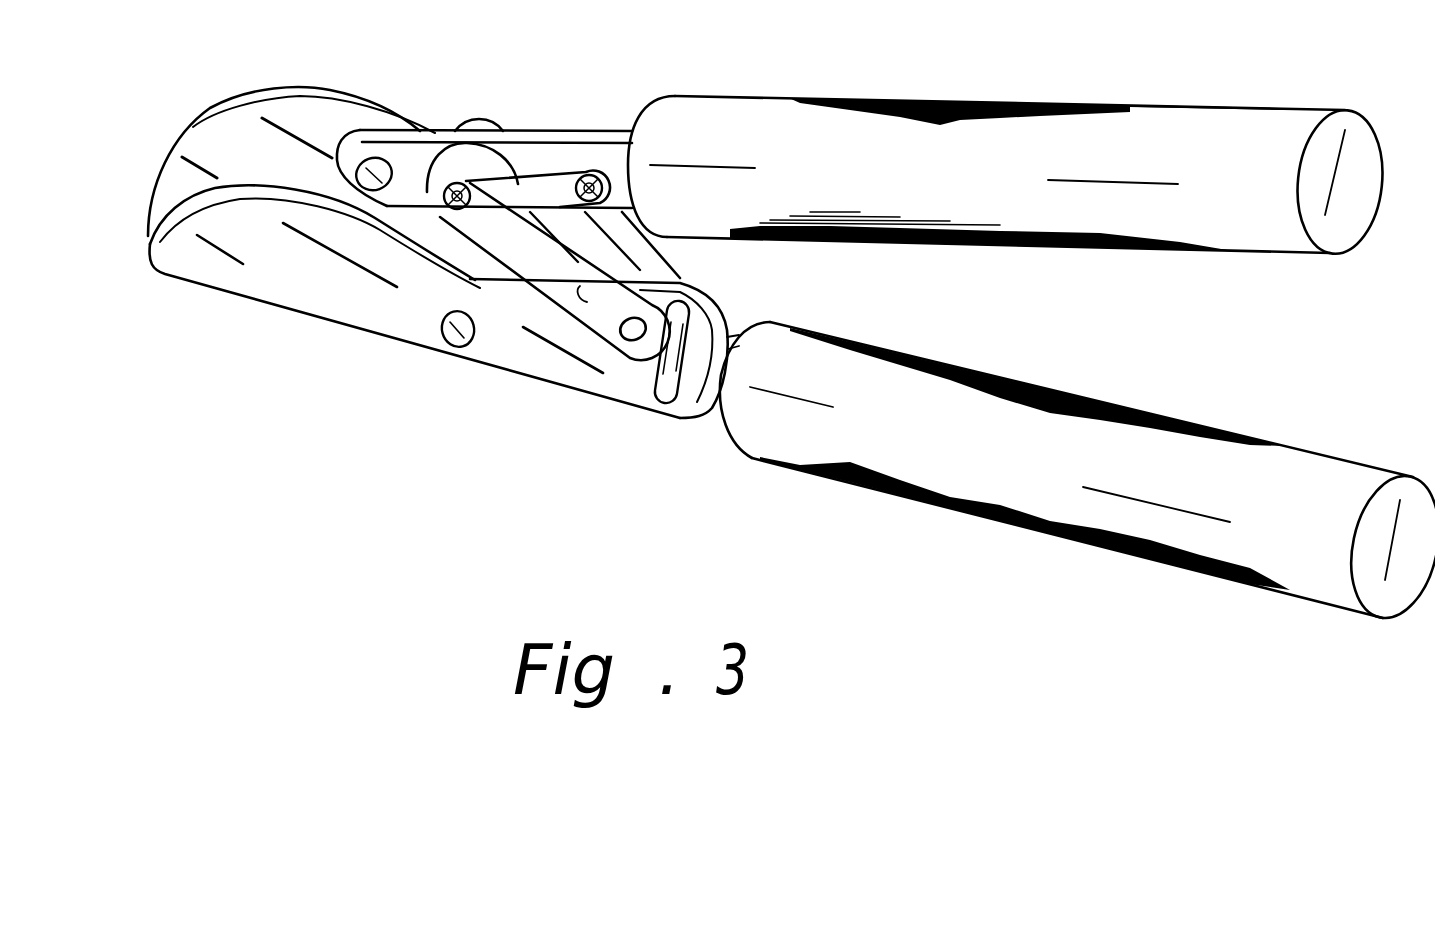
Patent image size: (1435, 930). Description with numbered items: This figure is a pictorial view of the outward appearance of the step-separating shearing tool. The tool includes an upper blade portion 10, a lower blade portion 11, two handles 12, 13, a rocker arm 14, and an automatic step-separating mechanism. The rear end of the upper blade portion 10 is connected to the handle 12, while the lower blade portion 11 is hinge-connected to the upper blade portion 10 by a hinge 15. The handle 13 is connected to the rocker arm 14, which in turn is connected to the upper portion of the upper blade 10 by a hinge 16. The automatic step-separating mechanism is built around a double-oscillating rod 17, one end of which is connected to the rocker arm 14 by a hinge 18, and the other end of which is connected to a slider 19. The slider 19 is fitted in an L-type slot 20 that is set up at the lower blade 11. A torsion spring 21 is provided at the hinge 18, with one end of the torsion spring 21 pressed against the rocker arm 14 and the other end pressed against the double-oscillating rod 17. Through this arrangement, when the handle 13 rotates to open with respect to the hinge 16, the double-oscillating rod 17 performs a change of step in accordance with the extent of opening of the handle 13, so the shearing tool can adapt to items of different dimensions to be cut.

The upper blade portion 10 is at (300, 118).
The lower blade portion 11 is at (340, 303).
The handle 12 is at (983, 480).
The handle 13 is at (773, 128).
The rocker arm 14 is at (540, 160).
The hinge 15 is at (463, 343).
The hinge 16 is at (382, 168).
The double-oscillating rod 17 is at (478, 163).
The hinge 18 is at (468, 183).
The slider 19 is at (676, 303).
The L-type slot 20 is at (666, 395).
The torsion spring 21 is at (567, 173).